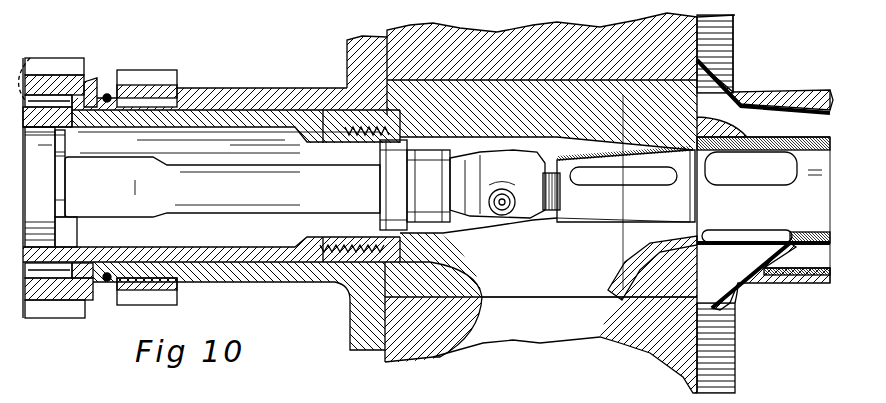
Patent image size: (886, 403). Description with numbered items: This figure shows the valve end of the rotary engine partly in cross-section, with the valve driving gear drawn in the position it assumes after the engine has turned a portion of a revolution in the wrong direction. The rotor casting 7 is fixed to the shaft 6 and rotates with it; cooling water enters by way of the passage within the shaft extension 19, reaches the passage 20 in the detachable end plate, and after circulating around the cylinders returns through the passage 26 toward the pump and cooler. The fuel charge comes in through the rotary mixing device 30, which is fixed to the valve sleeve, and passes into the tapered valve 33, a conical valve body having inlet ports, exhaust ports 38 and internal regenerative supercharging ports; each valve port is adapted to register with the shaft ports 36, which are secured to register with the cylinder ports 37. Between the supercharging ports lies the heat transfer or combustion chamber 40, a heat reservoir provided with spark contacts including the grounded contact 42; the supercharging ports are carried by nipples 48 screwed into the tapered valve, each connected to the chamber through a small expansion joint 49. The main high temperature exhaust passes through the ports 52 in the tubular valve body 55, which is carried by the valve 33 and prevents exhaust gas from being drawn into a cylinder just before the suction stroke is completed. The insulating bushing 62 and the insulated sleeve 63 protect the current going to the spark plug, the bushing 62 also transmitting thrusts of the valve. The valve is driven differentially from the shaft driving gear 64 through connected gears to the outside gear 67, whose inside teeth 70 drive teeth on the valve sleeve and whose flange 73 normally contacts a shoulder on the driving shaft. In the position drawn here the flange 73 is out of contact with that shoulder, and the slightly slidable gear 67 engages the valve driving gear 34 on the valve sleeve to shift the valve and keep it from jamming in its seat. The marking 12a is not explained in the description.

The shaft 6 is at (773, 278).
The rotor casting 7 is at (525, 45).
The section line 12a is at (633, 103).
The shaft extension 19 is at (823, 96).
The passage 20 is at (740, 90).
The passage 26 is at (812, 257).
The rotary mixing device 30 is at (47, 219).
The tapered valve 33 is at (613, 310).
The valve driving gear 34 is at (55, 270).
The shaft ports 36 is at (557, 290).
The cylinder ports 37 is at (490, 338).
The exhaust ports 38 is at (585, 243).
The heat transfer chamber 40 is at (497, 217).
The grounded contact 42 is at (560, 192).
The nipples 48 is at (510, 216).
The expansion joint 49 is at (514, 210).
The ports 52 is at (765, 175).
The tubular valve body 55 is at (805, 150).
The insulating bushing 62 is at (62, 180).
The insulated sleeve 63 is at (162, 210).
The shaft driving gear 64 is at (165, 72).
The outside gear 67 is at (72, 62).
The inside teeth 70 is at (24, 62).
The flange 73 is at (92, 82).